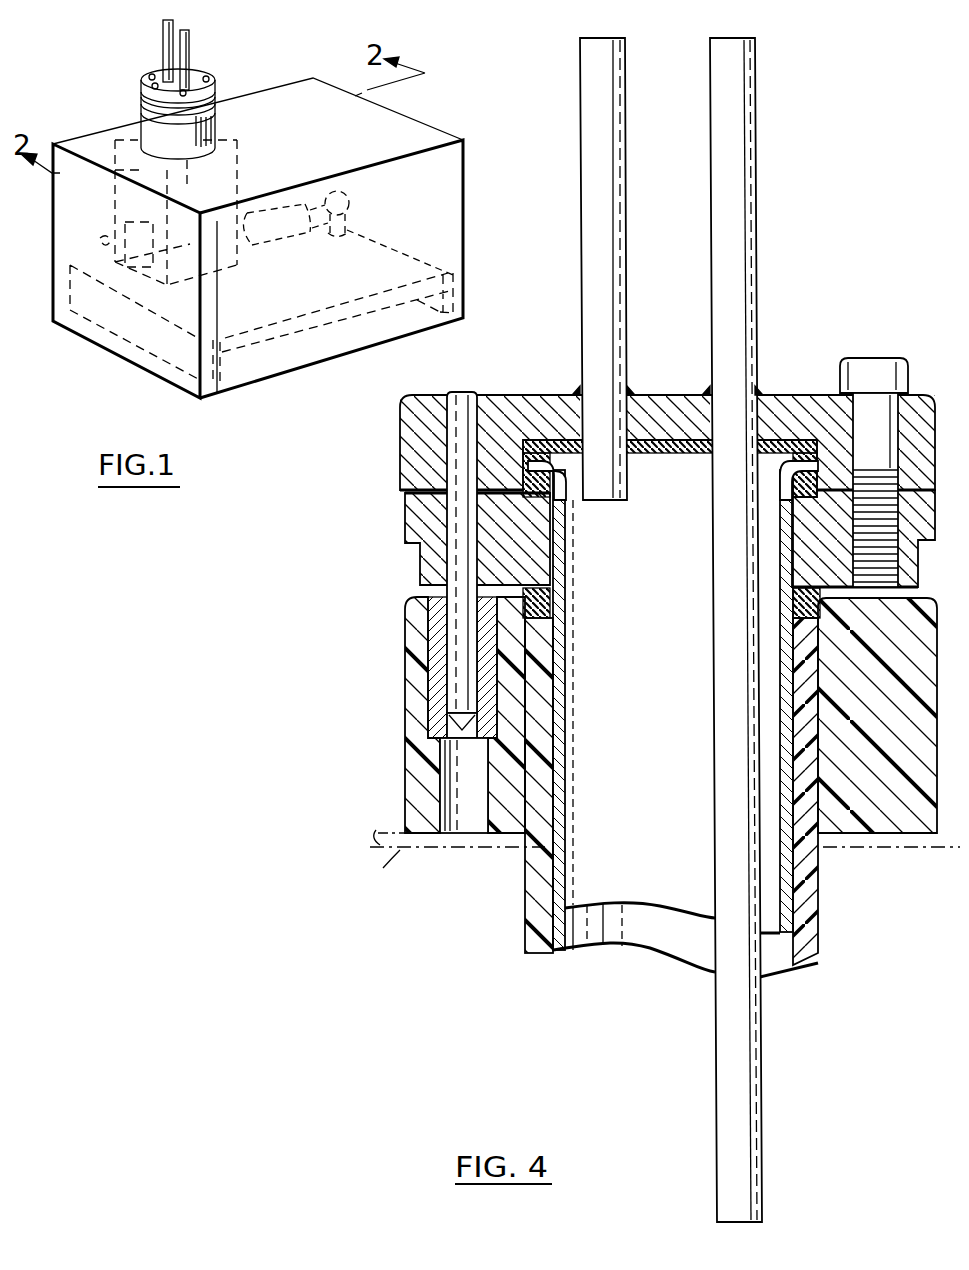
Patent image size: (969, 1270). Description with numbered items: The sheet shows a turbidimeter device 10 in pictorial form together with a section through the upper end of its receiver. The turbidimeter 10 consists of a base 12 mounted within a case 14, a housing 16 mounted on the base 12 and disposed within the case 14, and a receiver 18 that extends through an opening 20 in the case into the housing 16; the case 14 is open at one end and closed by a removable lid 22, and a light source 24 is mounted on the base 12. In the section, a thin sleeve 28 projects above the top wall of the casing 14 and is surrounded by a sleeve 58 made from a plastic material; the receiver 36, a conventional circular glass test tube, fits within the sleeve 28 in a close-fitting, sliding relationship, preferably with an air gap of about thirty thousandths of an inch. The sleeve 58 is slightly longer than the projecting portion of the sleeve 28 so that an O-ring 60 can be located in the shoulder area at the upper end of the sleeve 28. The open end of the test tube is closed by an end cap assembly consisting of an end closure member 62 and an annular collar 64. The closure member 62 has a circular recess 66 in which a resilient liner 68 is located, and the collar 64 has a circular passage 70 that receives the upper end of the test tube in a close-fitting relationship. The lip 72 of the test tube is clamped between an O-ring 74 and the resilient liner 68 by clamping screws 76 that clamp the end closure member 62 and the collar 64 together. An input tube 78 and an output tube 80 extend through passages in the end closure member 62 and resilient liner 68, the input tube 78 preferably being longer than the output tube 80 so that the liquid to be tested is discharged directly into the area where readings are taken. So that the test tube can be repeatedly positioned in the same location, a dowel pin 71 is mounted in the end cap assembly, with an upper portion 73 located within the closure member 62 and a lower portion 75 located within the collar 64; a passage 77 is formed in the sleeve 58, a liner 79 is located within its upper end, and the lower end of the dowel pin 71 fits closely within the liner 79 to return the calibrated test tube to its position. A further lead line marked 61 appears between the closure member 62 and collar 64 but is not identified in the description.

In FIG. 1, the turbidimeter device 10 is at (284, 77).
In FIG. 1, the base 12 is at (295, 333).
In FIG. 1, the case 14 is at (433, 123).
In FIG. 4, the case 14 is at (383, 868).
In FIG. 1, the housing 16 is at (240, 257).
In FIG. 1, the receiver 18 is at (152, 127).
In FIG. 1, the opening 20 is at (205, 149).
In FIG. 1, the removable lid 22 is at (135, 362).
In FIG. 1, the light source 24 is at (350, 197).
In FIG. 4, the sleeve 28 is at (533, 865).
In FIG. 4, the receiver 36 is at (650, 587).
In FIG. 4, the sleeve 58 is at (408, 725).
In FIG. 4, the O ring 60 is at (548, 600).
In FIG. 4, the clamp assembly 61 is at (407, 490).
In FIG. 4, the end closure member 62 is at (410, 445).
In FIG. 4, the annular collar 64 is at (410, 516).
In FIG. 4, the circular recess 66 is at (548, 440).
In FIG. 4, the resilient liner 68 is at (665, 440).
In FIG. 4, the circular passage 70 is at (548, 523).
In FIG. 4, the dowel pin 71 is at (464, 550).
In FIG. 4, the lip 72 is at (540, 461).
In FIG. 4, the upper portion 73 is at (455, 408).
In FIG. 4, the O-ring 74 is at (478, 432).
In FIG. 4, the lower portion 75 is at (460, 527).
In FIG. 4, the clamping screws 76 is at (872, 355).
In FIG. 4, the passage 77 is at (447, 773).
In FIG. 4, the input tube 78 is at (758, 140).
In FIG. 4, the liner 79 is at (437, 697).
In FIG. 4, the output tube 80 is at (627, 137).